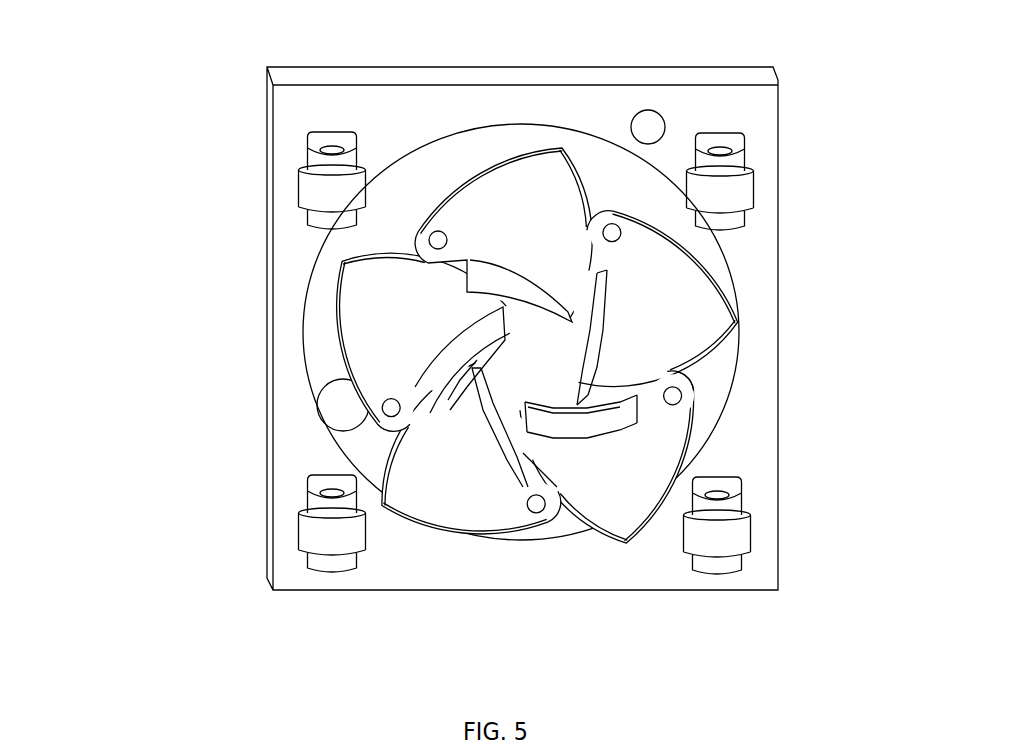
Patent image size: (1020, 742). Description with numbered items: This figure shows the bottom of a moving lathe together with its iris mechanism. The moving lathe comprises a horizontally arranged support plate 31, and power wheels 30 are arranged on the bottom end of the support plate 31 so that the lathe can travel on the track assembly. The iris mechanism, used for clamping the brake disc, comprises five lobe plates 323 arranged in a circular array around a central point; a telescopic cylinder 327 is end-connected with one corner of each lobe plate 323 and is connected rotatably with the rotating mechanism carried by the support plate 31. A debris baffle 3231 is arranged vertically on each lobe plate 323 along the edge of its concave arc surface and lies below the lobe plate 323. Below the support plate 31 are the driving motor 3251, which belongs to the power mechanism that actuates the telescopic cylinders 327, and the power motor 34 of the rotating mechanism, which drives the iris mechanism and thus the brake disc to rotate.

The power wheel 30 is at (325, 195).
The support plate 31 is at (730, 247).
The power motor 34 is at (648, 127).
The lobe plate 323 is at (675, 318).
The debris baffle 3231 is at (523, 292).
The telescopic cylinder 327 is at (382, 403).
The driving motor 3251 is at (347, 410).